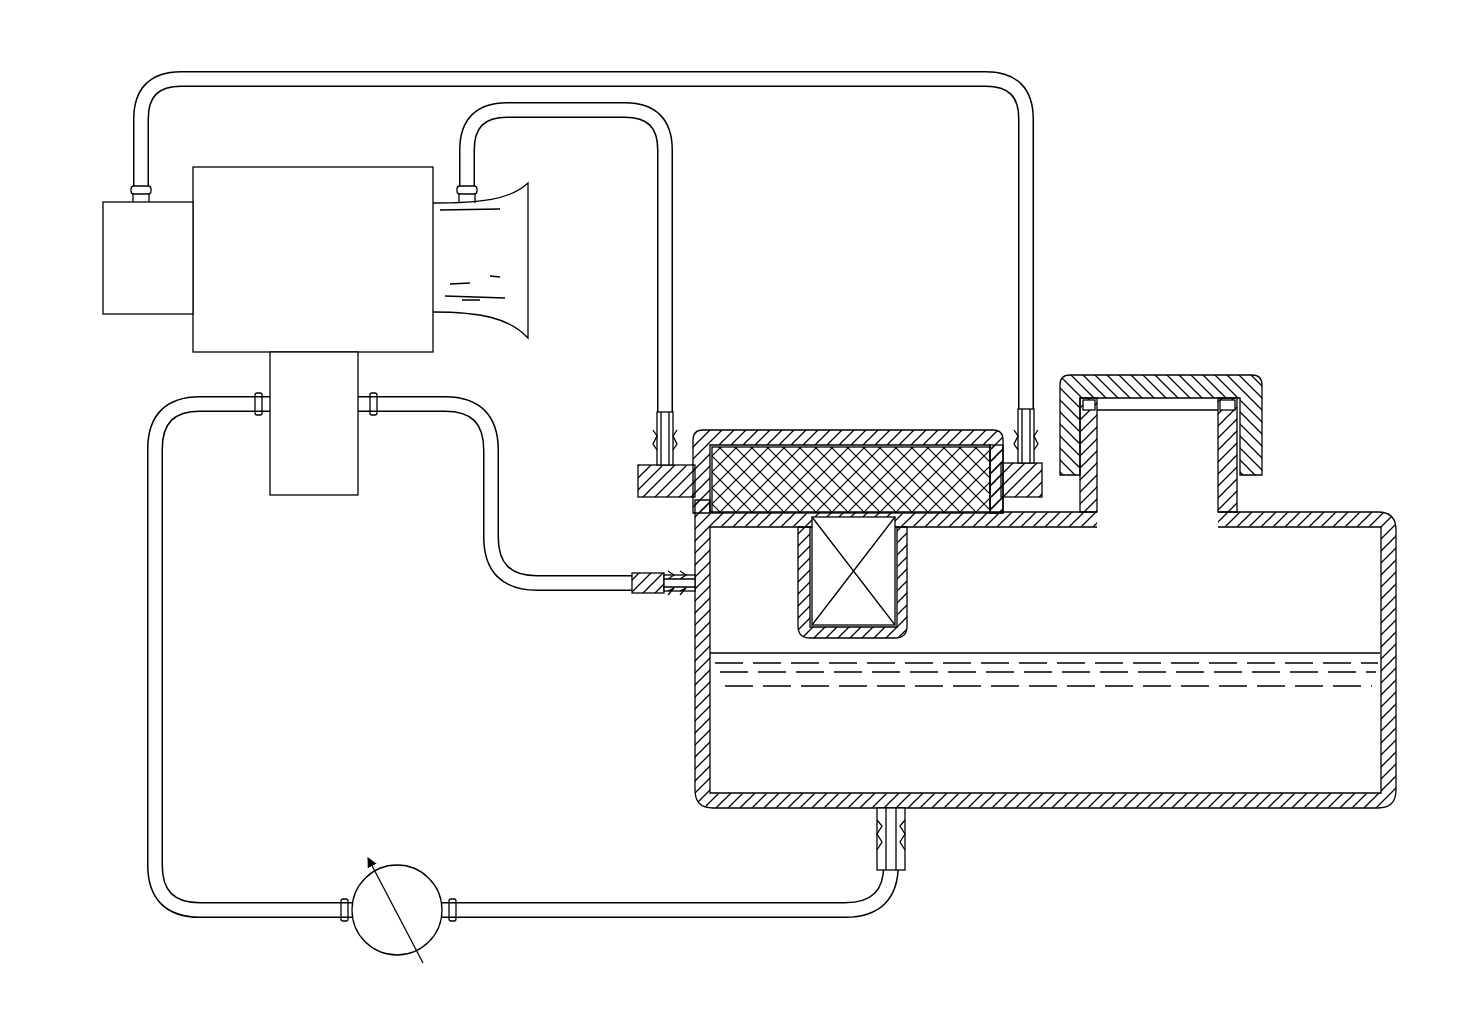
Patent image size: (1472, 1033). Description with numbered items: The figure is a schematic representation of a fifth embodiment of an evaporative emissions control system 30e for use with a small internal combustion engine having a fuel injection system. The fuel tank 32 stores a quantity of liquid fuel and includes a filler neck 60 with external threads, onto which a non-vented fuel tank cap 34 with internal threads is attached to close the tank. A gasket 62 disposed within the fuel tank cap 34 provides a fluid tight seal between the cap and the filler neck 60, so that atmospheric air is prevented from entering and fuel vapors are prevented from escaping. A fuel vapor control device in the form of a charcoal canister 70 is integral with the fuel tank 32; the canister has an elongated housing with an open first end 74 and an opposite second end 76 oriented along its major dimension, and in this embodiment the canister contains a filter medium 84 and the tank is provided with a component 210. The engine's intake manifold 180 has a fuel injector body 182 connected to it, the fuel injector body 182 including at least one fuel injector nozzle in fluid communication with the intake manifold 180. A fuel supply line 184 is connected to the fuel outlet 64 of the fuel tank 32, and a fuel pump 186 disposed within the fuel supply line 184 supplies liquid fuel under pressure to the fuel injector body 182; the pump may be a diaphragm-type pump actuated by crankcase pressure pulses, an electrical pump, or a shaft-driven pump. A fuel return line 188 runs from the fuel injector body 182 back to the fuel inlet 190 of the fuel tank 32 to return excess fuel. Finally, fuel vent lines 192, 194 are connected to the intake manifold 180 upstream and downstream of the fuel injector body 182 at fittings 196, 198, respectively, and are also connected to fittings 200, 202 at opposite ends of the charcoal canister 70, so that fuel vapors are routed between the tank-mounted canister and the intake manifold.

The evaporative emissions control system 30e is at (1272, 134).
The fuel tank 32 is at (1406, 516).
The fuel tank cap 34 is at (1192, 375).
The filler neck 60 is at (1232, 490).
The gasket 62 is at (1262, 403).
The fuel outlet 64 is at (880, 835).
The charcoal canister 70 is at (840, 414).
The open first end 74 is at (714, 426).
The second end 76 is at (955, 433).
The filter media 84 is at (798, 460).
The intake manifold 180 is at (147, 290).
The fuel injector body 182 is at (298, 264).
The fuel supply line 184 is at (157, 550).
The fuel pump 186 is at (403, 866).
The fuel return line 188 is at (485, 518).
The fuel inlet 190 is at (677, 597).
The fuel vent line 192 is at (667, 195).
The fuel vent line 194 is at (820, 80).
The fitting 196 is at (483, 193).
The fitting 198 is at (152, 193).
The fitting 200 is at (653, 438).
The fitting 202 is at (1013, 443).
The level sensor 210 is at (882, 568).